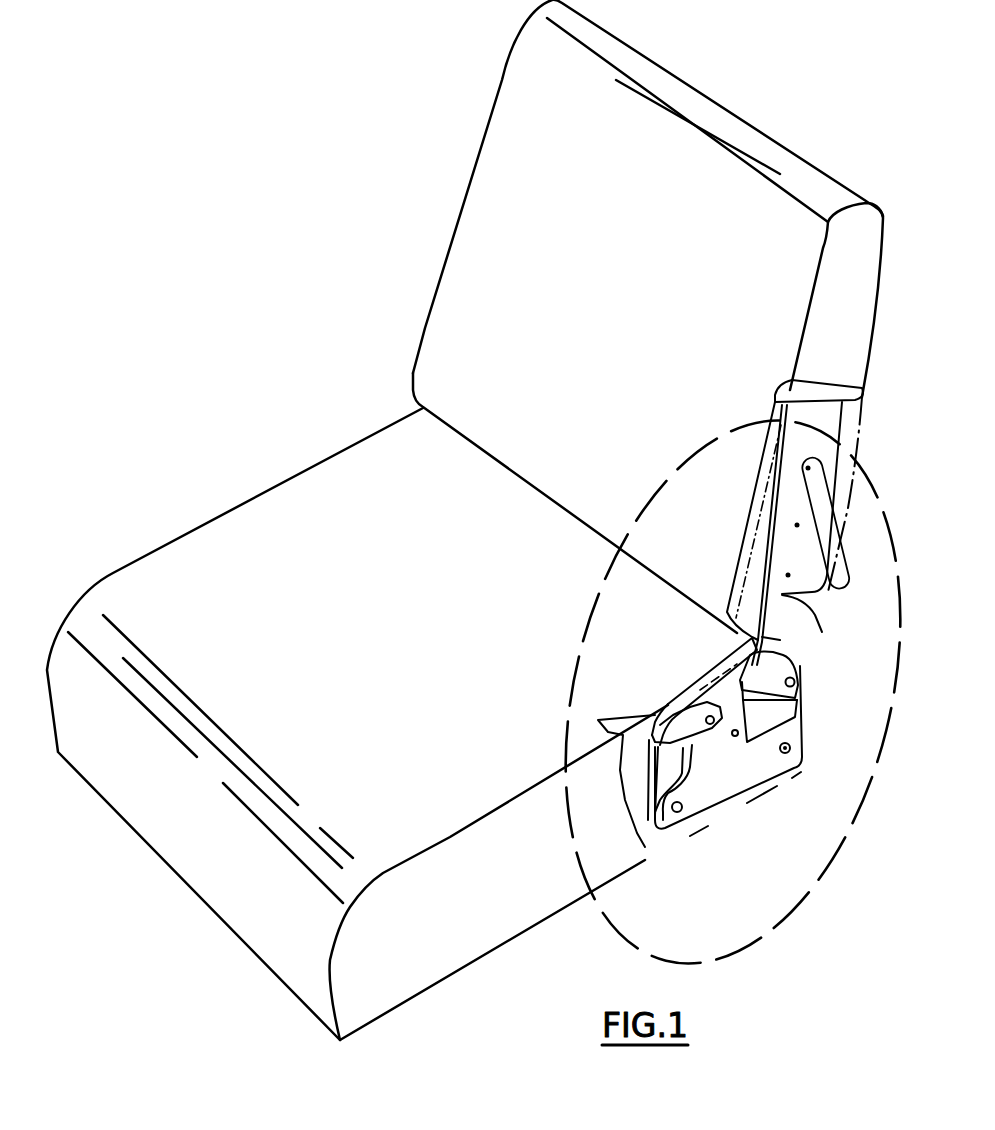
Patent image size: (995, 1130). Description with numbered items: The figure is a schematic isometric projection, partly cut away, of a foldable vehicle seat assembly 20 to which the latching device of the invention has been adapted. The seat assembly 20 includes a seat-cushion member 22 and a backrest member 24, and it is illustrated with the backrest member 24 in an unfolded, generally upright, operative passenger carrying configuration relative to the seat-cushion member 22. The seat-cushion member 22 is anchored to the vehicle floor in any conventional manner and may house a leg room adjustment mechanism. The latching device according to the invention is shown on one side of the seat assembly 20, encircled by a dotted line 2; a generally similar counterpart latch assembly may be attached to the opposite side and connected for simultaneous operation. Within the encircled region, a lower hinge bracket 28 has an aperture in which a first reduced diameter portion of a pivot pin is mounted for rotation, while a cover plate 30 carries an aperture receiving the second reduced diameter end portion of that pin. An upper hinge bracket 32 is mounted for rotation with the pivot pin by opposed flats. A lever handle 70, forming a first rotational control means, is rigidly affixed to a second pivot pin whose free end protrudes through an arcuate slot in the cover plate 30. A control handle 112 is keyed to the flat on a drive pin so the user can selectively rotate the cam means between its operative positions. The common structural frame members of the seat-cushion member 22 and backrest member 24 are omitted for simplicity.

The foldable vehicle seat assembly 20 is at (355, 343).
The backrest member 24 is at (750, 137).
The seat-cushion member 22 is at (497, 915).
The dotted line 2 is at (790, 913).
The upper hinge bracket 32 is at (782, 593).
The lever handle 70 is at (803, 660).
The cover plate 30 is at (740, 773).
The lower hinge bracket 28 is at (672, 766).
The control handle 112 is at (661, 688).